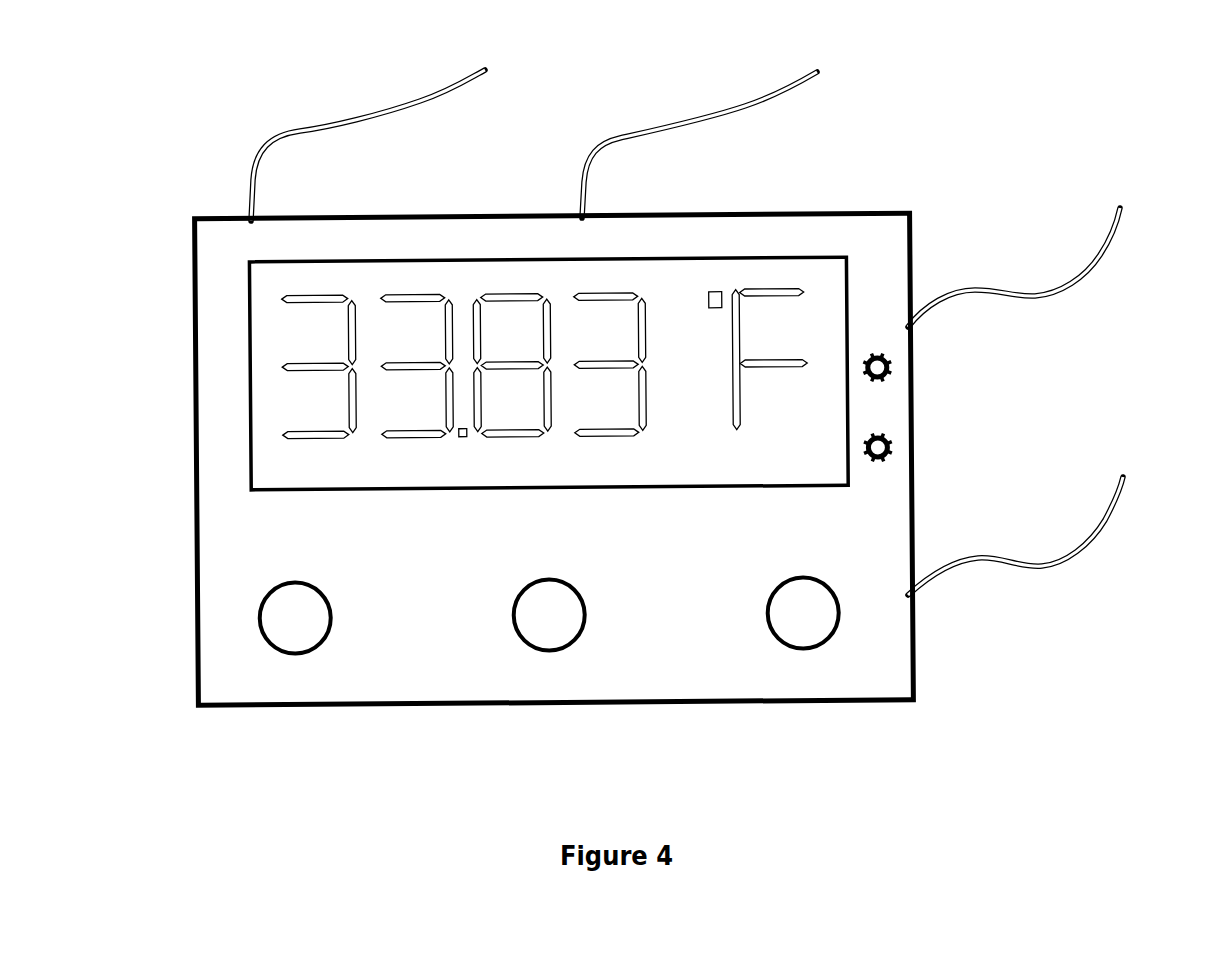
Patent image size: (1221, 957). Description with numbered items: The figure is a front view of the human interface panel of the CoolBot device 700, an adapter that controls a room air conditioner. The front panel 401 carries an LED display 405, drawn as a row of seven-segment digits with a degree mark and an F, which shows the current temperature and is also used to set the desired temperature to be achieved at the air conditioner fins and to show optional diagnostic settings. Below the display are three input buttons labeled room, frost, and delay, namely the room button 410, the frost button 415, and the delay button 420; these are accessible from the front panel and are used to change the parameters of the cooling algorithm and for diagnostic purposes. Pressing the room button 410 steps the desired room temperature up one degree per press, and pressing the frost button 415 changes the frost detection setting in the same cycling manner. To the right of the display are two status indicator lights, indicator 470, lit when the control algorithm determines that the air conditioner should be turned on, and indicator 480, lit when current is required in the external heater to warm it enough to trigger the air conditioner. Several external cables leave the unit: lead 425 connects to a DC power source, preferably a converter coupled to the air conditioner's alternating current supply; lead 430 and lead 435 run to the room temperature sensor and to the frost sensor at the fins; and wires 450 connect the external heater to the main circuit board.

The CoolBot device 700 is at (511, 459).
The front panel 401 is at (891, 253).
The display 405 is at (548, 415).
The room button 410 is at (343, 618).
The frost button 415 is at (596, 617).
The delay button 420 is at (761, 610).
The lead 425 is at (1030, 539).
The lead 430 is at (426, 130).
The lead 435 is at (734, 137).
The wires 450 is at (1034, 253).
The status indicator light 470 is at (928, 371).
The status indicator light 480 is at (929, 452).